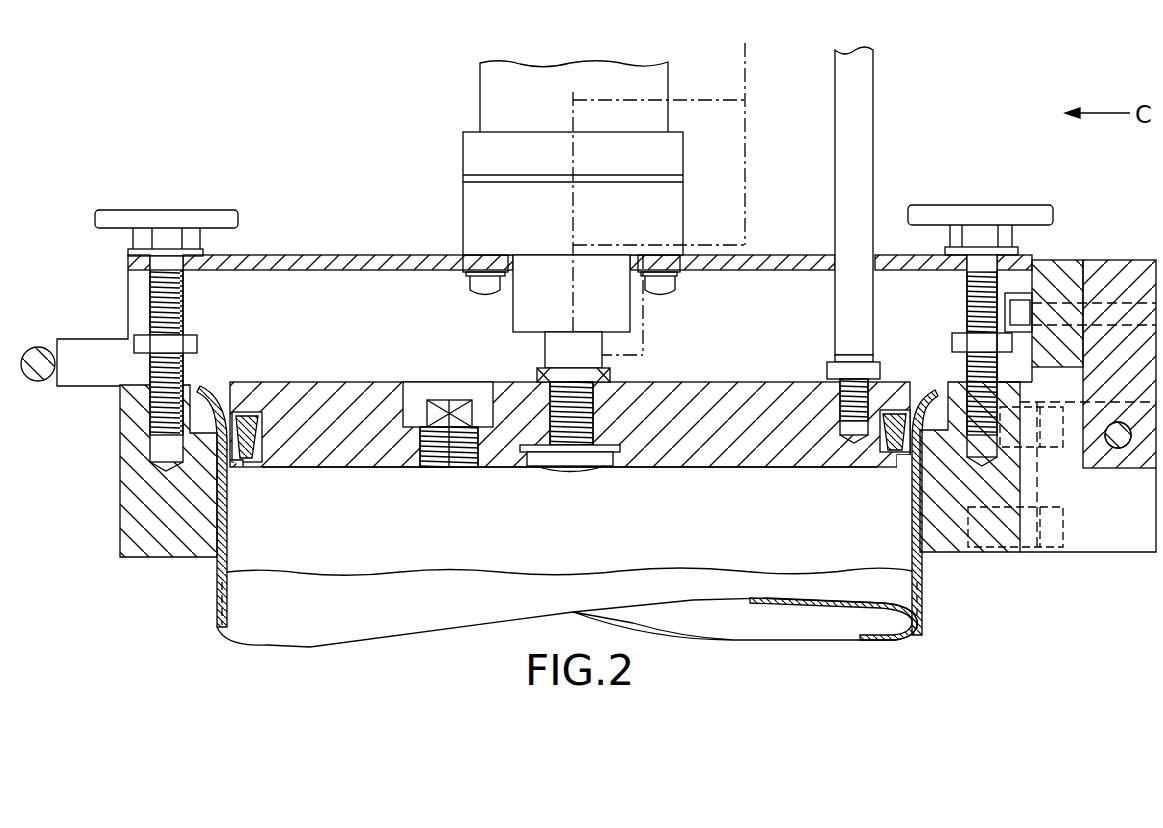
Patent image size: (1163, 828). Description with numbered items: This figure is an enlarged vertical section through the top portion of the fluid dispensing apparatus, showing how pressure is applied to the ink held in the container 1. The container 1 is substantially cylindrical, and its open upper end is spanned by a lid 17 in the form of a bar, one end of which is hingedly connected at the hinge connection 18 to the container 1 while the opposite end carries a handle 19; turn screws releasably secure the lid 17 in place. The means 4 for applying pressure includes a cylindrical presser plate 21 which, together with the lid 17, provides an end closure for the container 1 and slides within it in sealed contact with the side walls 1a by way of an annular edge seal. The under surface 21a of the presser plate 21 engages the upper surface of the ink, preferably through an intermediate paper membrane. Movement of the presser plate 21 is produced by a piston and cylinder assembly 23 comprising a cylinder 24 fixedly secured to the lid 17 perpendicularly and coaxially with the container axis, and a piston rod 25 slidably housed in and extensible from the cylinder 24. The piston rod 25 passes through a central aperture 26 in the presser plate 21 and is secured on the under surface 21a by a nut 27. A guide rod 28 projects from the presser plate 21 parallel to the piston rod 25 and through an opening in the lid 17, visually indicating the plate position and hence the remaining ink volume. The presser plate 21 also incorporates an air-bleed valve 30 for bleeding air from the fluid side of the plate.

The container 1 is at (544, 516).
The side walls 1a is at (226, 497).
The means for applying pressure 4 is at (556, 197).
The lid 17 is at (345, 255).
The hinge connection 18 is at (1118, 450).
The handle 19 is at (42, 346).
The presser plate 21 is at (762, 398).
The under surface of presser plate 21a is at (750, 468).
The piston and cylinder assembly 23 is at (668, 164).
The cylinder 24 is at (648, 74).
The piston rod 25 is at (598, 352).
The aperture 26 is at (597, 413).
The nut 27 is at (543, 458).
The guide rod 28 is at (858, 114).
The air-bleed valve 30 is at (445, 405).